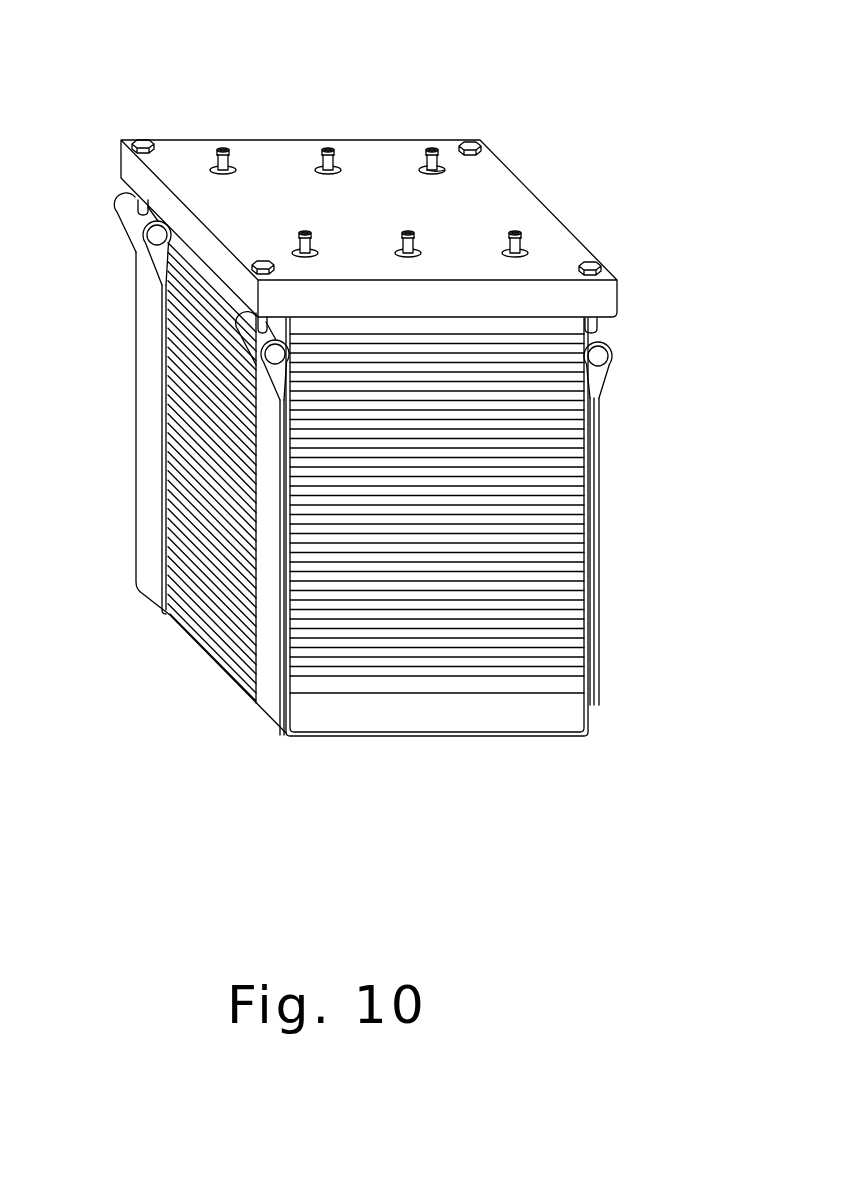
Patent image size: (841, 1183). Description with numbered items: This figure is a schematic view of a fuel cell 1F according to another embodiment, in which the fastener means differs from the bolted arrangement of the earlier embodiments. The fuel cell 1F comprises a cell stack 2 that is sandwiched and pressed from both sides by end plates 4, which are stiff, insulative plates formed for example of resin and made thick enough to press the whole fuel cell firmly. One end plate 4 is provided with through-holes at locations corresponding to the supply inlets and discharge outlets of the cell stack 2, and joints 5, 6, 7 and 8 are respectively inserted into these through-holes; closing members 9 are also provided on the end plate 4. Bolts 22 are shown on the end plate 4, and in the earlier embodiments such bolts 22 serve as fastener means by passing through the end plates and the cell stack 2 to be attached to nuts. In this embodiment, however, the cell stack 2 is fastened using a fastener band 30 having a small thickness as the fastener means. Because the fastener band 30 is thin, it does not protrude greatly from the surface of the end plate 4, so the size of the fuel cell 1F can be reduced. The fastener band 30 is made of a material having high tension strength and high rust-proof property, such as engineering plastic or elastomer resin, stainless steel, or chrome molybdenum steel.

The fuel cell 1F is at (496, 89).
The cell stack 2 is at (193, 483).
The end plate 4 is at (275, 167).
The joint 5 is at (220, 150).
The joint 6 is at (515, 234).
The joint 7 is at (415, 243).
The joint 8 is at (322, 147).
The closing member 9 is at (444, 167).
The bolt 22 is at (131, 146).
The fastener band 30 is at (152, 580).